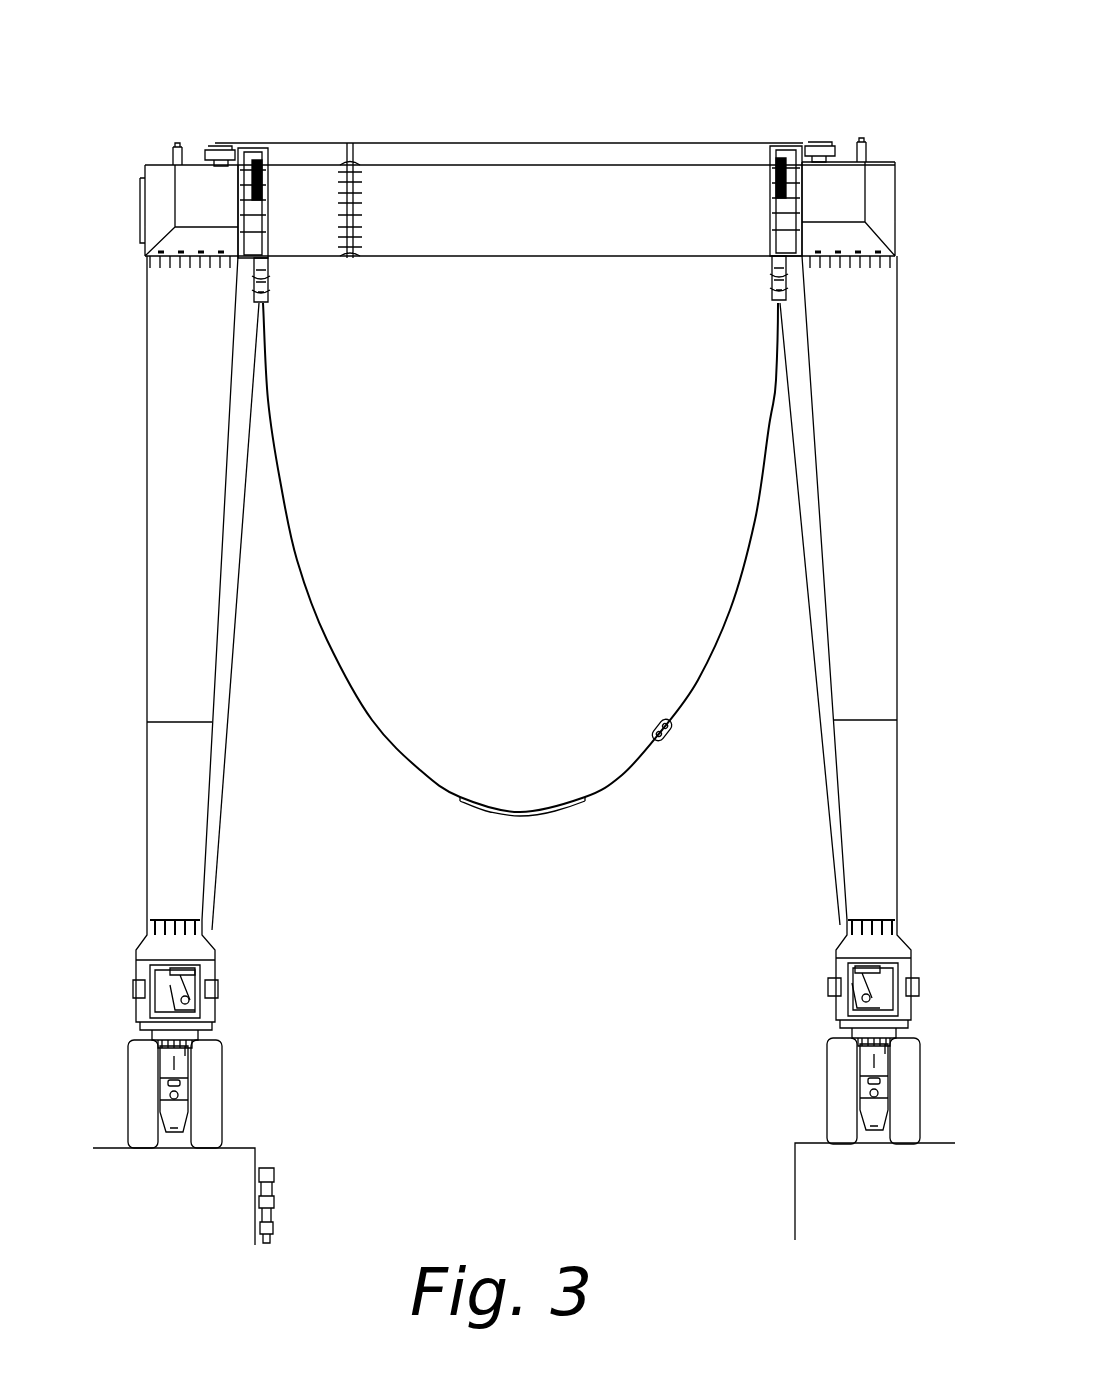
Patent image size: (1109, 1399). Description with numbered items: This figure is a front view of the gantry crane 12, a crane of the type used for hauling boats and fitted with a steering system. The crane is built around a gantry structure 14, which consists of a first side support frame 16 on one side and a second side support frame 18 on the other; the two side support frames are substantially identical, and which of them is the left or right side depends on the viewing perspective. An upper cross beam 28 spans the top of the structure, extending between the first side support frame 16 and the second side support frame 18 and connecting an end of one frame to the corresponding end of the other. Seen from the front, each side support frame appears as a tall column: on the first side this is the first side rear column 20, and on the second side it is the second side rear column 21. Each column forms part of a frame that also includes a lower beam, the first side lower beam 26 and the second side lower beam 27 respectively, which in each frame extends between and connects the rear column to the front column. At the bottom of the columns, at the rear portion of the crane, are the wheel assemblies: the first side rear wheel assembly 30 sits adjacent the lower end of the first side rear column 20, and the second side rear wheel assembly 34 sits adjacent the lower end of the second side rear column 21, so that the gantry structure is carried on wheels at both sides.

The gantry crane 12 is at (792, 84).
The gantry structure 14 is at (918, 332).
The first side support frame 16 is at (142, 497).
The second side support frame 18 is at (905, 492).
The first side rear column 20 is at (184, 795).
The second side rear column 21 is at (870, 808).
The first side lower beam 26 is at (147, 965).
The second side lower beam 27 is at (902, 958).
The upper cross beam 28 is at (516, 228).
The first side rear wheel assembly 30 is at (226, 1090).
The second side rear wheel assembly 34 is at (824, 1090).